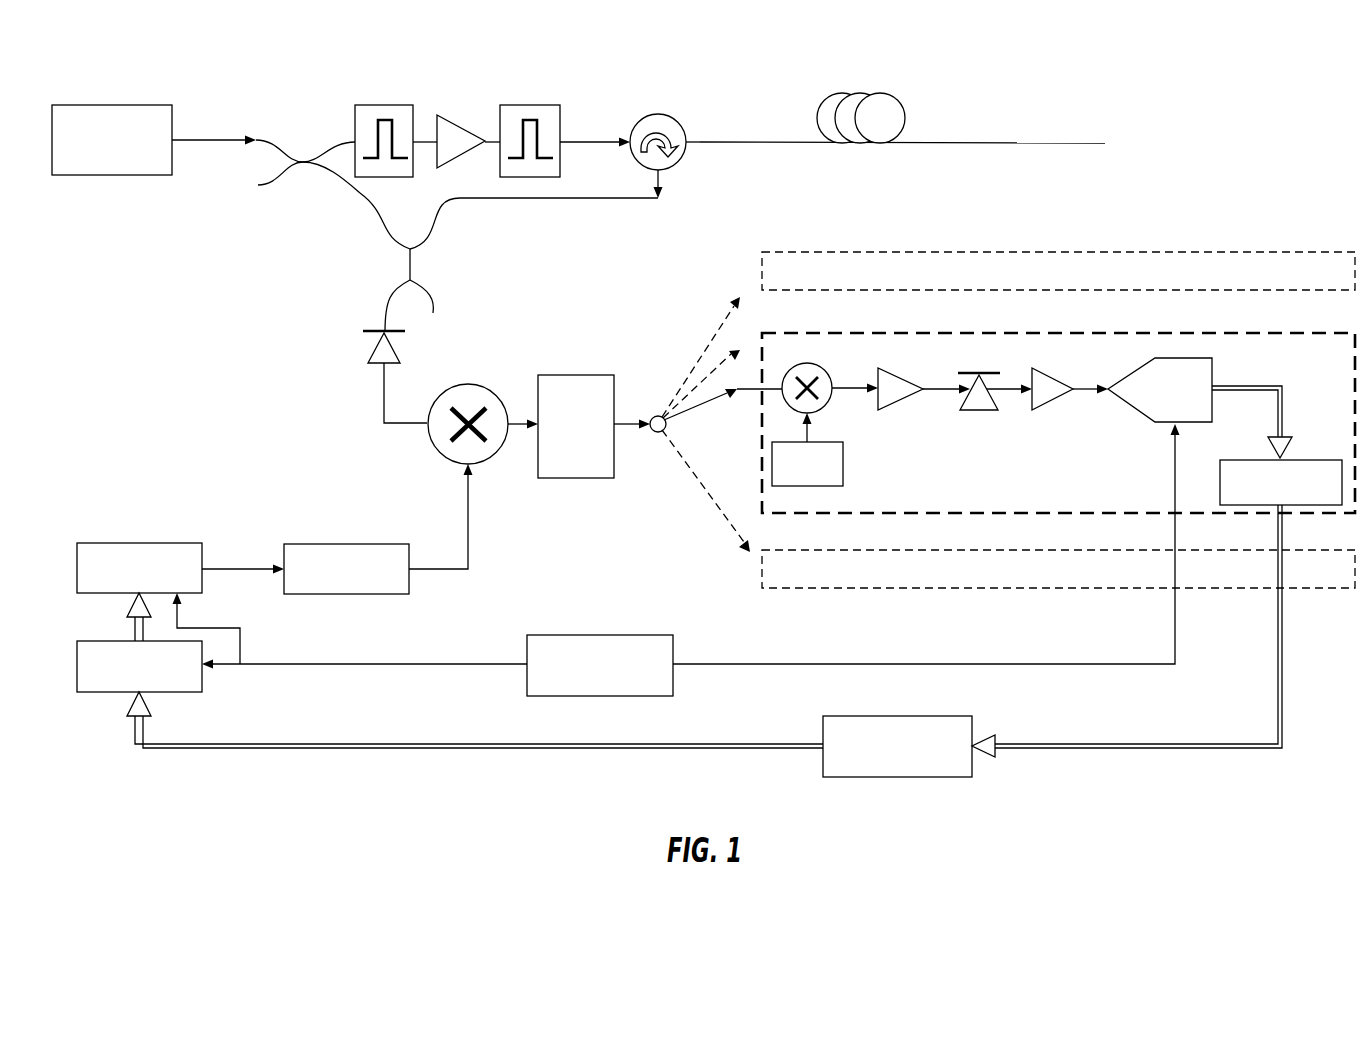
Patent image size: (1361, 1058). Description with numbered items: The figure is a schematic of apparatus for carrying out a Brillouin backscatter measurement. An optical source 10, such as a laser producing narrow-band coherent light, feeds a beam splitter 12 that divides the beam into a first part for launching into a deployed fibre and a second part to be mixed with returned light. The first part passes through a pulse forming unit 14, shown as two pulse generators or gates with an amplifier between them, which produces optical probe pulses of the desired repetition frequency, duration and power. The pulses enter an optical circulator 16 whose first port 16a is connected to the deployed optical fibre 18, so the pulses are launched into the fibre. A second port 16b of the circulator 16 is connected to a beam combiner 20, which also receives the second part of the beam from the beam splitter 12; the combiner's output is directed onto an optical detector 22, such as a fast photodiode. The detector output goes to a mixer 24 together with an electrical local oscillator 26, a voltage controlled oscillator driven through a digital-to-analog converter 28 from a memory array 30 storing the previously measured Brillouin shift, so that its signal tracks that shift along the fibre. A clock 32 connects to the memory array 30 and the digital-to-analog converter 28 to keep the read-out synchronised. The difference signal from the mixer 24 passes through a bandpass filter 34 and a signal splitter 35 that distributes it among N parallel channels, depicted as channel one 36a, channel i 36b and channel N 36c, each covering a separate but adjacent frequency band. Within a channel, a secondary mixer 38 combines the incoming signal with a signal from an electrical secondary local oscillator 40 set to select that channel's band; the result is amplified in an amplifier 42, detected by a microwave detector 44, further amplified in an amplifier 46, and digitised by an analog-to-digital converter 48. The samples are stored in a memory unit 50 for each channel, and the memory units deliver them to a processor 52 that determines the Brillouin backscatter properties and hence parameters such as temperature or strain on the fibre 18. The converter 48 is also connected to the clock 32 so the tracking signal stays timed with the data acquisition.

The optical source 10 is at (119, 157).
The beam splitter 12 is at (303, 172).
The pulse forming unit 14 is at (575, 98).
The optical circulator 16 is at (652, 113).
The first port 16a is at (684, 158).
The second port 16b is at (663, 178).
The deployed optical fibre 18 is at (1020, 145).
The beam combiner 20 is at (420, 285).
The optical detector 22 is at (367, 350).
The mixer 24 is at (430, 446).
The electrical local oscillator 26 is at (360, 584).
The digital-to-analog converter 28 is at (151, 584).
The memory array 30 is at (151, 683).
The clock 32 is at (615, 683).
The bandpass filter 34 is at (591, 441).
The signal splitter 35 is at (655, 413).
The channel 1 36a is at (795, 252).
The channel i 36b is at (790, 333).
The channel N 36c is at (795, 550).
The secondary mixer 38 is at (833, 348).
The electrical secondary local oscillator 40 is at (821, 476).
The amplifier 42 is at (903, 399).
The microwave detector 44 is at (980, 412).
The amplifier 46 is at (1053, 400).
The analog-to-digital converter 48 is at (1190, 406).
The memory unit 50 is at (1295, 497).
The processor 52 is at (912, 762).